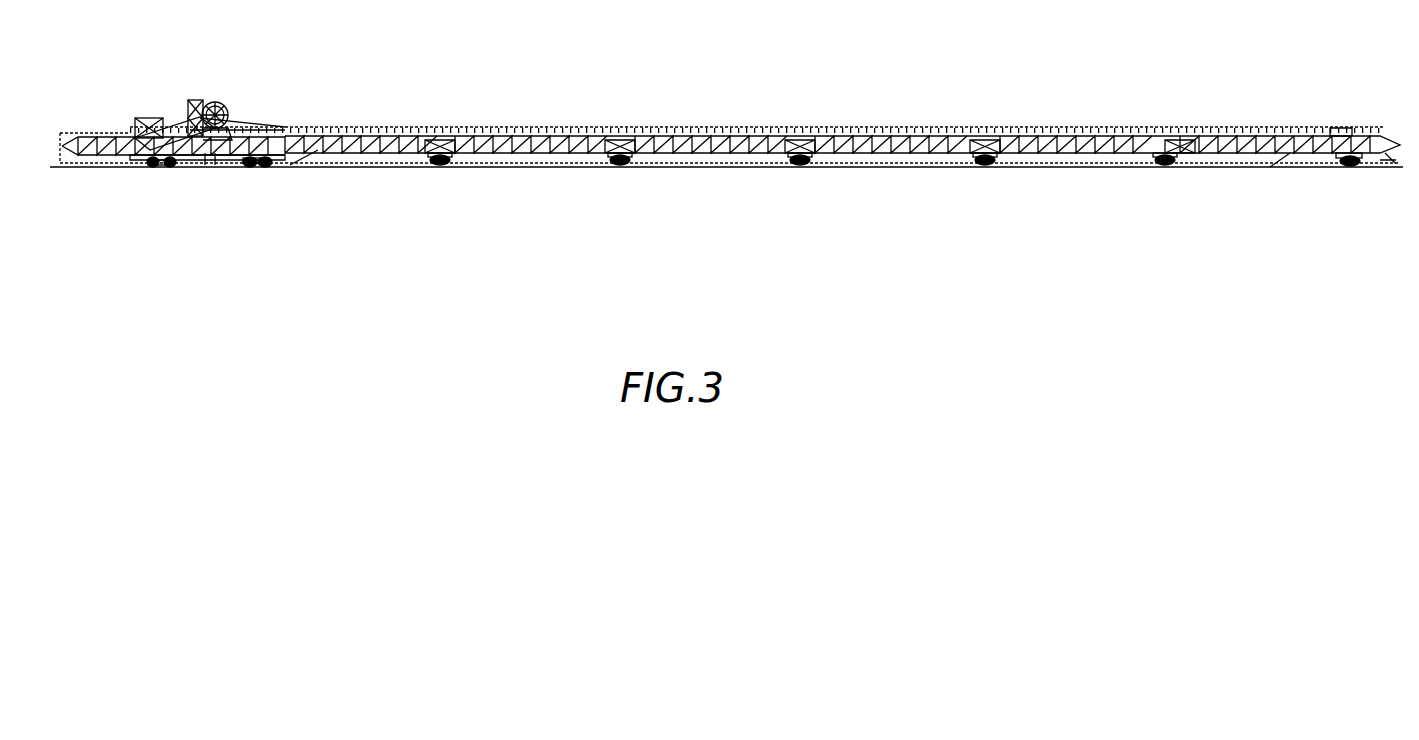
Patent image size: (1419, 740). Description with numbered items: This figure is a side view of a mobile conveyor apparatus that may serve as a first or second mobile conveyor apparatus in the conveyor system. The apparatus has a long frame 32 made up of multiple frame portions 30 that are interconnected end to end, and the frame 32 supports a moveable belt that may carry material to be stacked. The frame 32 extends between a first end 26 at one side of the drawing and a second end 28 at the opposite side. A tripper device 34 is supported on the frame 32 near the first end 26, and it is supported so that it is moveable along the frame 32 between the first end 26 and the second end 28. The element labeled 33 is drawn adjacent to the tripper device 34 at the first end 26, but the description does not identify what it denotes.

The first end 26 is at (101, 158).
The second end 28 is at (1342, 130).
The frame portions 30 is at (372, 158).
The frame 32 is at (838, 110).
The control box 33 is at (150, 120).
The tripper device 34 is at (198, 102).